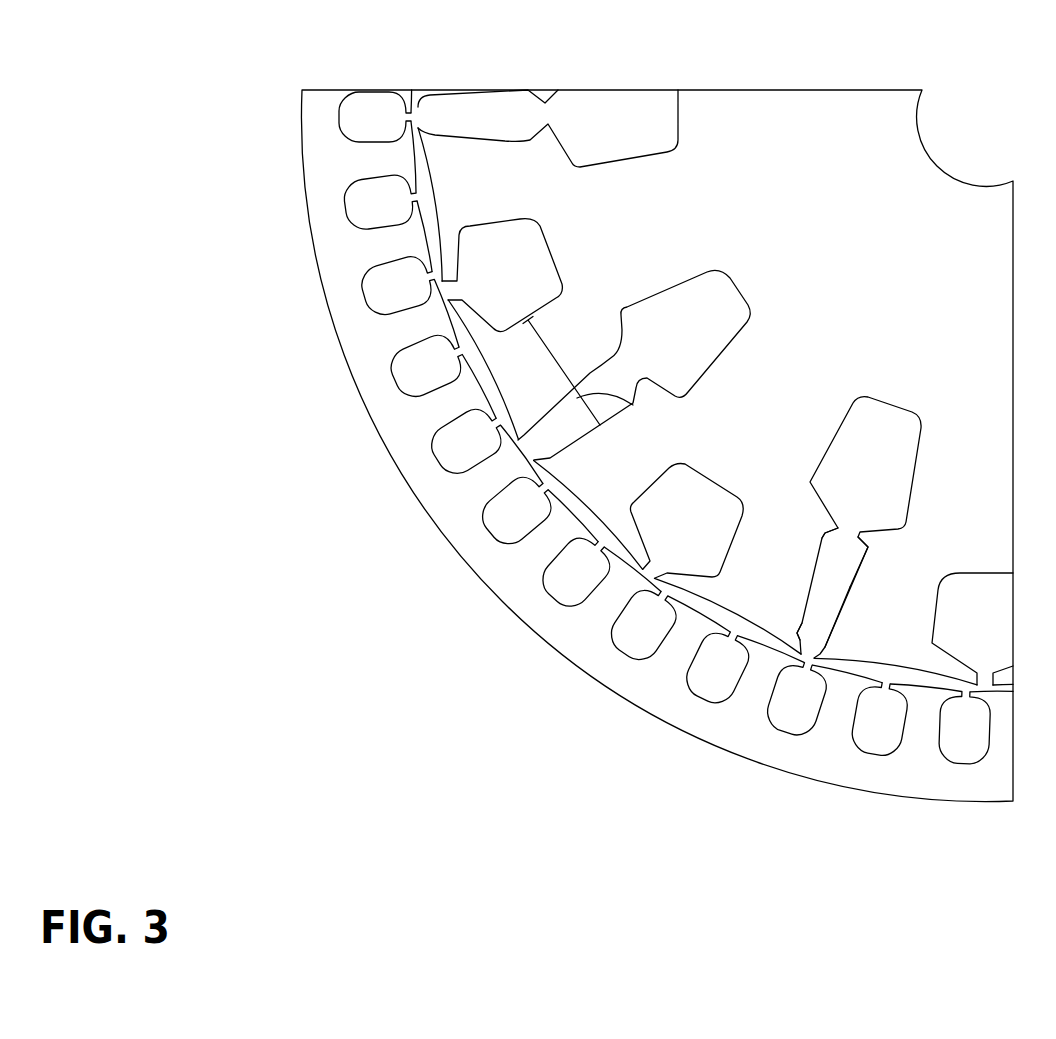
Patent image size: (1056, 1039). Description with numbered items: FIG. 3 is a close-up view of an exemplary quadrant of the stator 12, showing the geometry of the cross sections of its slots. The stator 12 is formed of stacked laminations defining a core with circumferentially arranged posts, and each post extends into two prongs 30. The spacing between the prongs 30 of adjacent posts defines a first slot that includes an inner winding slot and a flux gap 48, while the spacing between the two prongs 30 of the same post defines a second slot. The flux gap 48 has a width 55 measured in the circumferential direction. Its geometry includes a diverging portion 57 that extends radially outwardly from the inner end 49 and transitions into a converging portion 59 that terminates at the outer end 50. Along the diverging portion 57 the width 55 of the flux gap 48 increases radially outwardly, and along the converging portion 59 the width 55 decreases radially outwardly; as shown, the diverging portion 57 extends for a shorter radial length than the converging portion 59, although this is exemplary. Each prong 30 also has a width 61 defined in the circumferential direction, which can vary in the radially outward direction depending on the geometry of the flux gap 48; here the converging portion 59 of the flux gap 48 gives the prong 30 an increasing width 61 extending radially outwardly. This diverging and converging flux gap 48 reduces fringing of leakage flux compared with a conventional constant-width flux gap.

The stator 12 is at (862, 193).
The prongs 30 is at (497, 340).
The flux gap 48 is at (848, 590).
The inner end 49 is at (836, 549).
The outer end 50 is at (820, 627).
The width 55 is at (633, 405).
The diverging portion 57 is at (867, 546).
The converging portion 59 is at (850, 610).
The width 61 is at (547, 350).